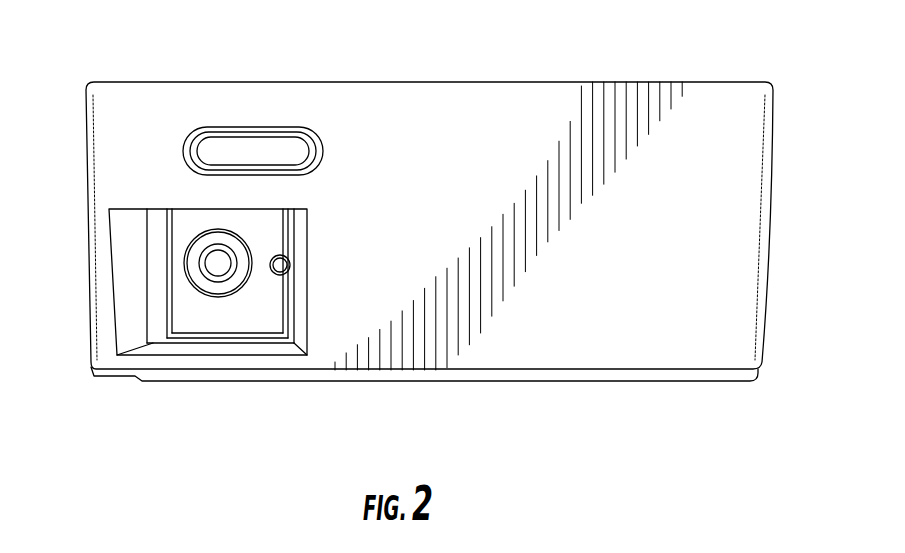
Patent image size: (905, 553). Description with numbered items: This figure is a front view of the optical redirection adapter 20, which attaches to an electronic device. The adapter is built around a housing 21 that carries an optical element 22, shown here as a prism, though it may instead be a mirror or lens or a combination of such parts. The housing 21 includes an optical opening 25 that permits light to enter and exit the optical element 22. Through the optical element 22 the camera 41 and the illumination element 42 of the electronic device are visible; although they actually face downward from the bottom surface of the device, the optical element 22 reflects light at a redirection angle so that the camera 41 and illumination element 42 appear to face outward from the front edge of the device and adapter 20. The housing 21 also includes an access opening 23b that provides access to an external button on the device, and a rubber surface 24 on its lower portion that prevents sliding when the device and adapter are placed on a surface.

The optical redirection adapter 20 is at (768, 411).
The housing 21 is at (752, 268).
The optical element 22 is at (277, 325).
The access opening 23b is at (210, 128).
The rubber surface 24 is at (588, 376).
The optical opening 25 is at (227, 350).
The camera 41 is at (197, 261).
The illumination element 42 is at (268, 273).